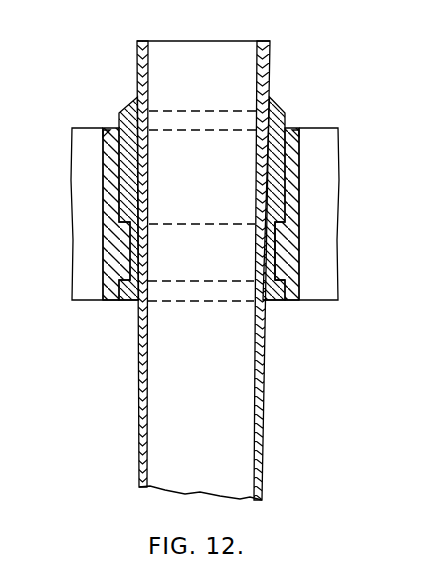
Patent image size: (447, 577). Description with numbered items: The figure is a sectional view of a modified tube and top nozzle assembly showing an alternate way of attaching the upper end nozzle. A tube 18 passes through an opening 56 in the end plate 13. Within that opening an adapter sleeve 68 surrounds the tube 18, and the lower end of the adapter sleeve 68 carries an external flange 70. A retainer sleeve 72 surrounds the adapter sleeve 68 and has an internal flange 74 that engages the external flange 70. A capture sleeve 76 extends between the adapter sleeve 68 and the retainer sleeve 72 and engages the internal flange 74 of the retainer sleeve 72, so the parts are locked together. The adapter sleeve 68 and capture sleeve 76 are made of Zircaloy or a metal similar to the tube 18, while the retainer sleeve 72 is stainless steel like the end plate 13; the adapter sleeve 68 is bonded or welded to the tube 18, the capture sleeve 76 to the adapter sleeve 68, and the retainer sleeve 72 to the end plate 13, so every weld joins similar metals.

The tube 18 is at (140, 371).
The plate 13 is at (340, 222).
The opening 56 is at (299, 156).
The retainer sleeve 72 is at (299, 184).
The adapter sleeve 68 is at (277, 250).
The external flange 70 is at (291, 297).
The internal flange 74 is at (120, 224).
The capture sleeve 76 is at (120, 118).